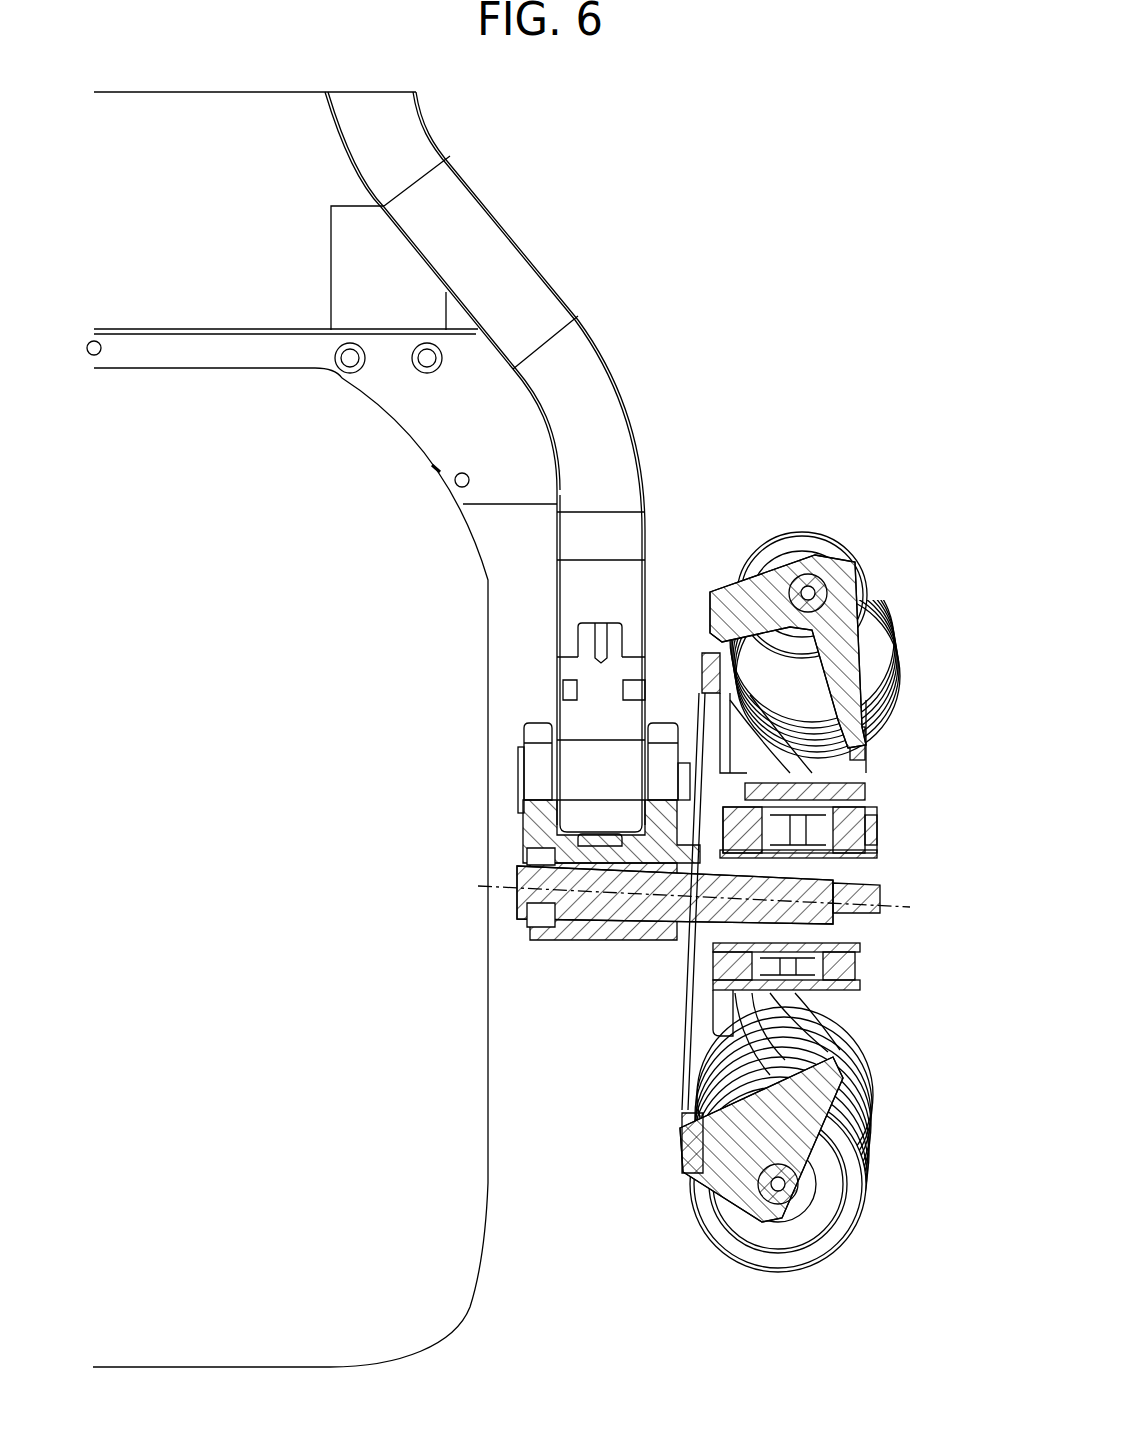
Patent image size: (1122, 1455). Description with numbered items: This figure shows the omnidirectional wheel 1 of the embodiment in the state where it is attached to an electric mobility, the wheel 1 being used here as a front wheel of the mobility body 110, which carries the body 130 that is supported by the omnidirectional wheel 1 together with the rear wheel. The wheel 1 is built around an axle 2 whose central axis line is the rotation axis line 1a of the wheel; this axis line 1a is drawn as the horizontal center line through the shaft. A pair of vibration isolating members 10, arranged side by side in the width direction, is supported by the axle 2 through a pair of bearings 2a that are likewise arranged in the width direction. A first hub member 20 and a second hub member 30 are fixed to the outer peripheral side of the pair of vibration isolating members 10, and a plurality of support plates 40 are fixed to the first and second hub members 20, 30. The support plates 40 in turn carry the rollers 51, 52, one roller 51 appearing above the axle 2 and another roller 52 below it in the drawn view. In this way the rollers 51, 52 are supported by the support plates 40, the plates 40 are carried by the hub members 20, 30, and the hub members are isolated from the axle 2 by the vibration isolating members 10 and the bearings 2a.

The omnidirectional wheel 1 is at (793, 515).
The rotation axis line 1a is at (500, 880).
The axle 2 is at (577, 903).
The bearings 2a is at (750, 867).
The vibration isolating members 10 is at (867, 840).
The first hub member 20 is at (703, 668).
The second hub member 30 is at (873, 748).
The support plates 40 is at (722, 593).
The roller 51 is at (827, 530).
The roller 52 is at (775, 1270).
The mobility body 110 is at (518, 232).
The body 130 is at (488, 1183).